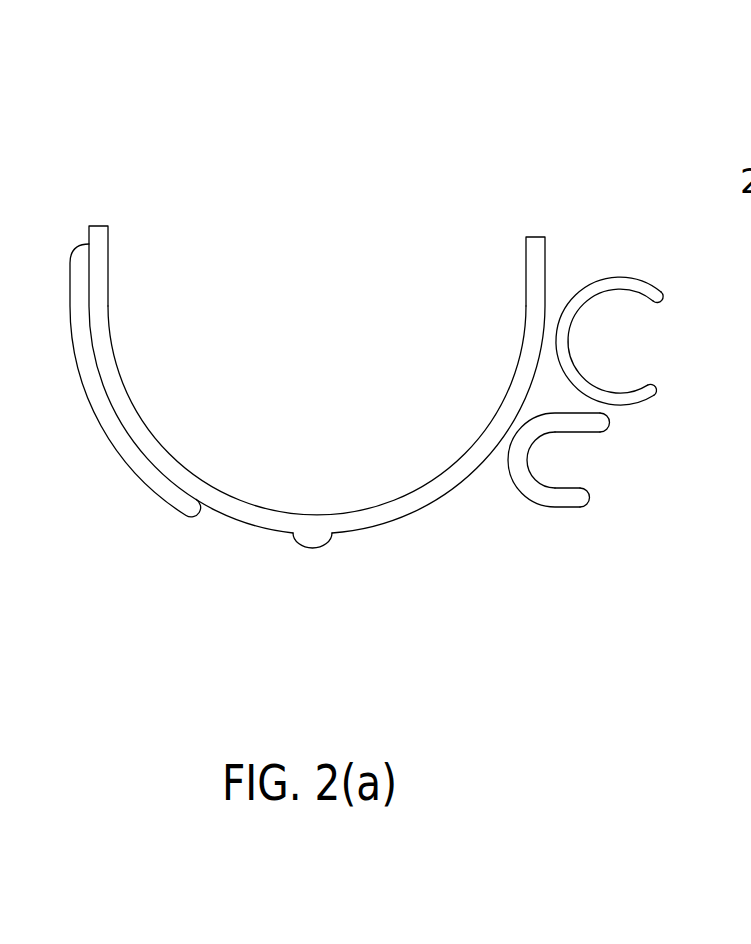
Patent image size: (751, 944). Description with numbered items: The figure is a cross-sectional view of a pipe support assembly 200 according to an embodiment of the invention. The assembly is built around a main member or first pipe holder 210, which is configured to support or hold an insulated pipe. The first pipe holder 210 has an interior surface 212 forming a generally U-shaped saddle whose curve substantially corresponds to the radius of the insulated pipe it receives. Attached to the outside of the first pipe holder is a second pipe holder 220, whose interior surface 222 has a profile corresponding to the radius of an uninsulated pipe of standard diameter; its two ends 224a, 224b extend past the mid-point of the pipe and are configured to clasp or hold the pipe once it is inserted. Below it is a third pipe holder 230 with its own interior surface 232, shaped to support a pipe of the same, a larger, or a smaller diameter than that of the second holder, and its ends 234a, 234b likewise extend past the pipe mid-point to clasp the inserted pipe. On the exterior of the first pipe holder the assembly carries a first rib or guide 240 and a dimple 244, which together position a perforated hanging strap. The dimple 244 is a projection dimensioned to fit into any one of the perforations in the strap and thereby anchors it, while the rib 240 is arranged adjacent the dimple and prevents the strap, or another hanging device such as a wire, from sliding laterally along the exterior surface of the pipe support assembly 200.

The pipe support assembly 200 is at (443, 120).
The first pipe holder 210 is at (440, 468).
The interior surface 212 is at (237, 497).
The dimple 244 is at (308, 548).
The first rib or guide 240 is at (115, 448).
The second pipe holder 220 is at (609, 264).
The interior surface 222 is at (567, 357).
The end 224a is at (663, 294).
The end 224b is at (658, 393).
The third pipe holder 230 is at (598, 505).
The interior surface 232 is at (528, 456).
The end 234a is at (608, 433).
The end 234b is at (588, 486).